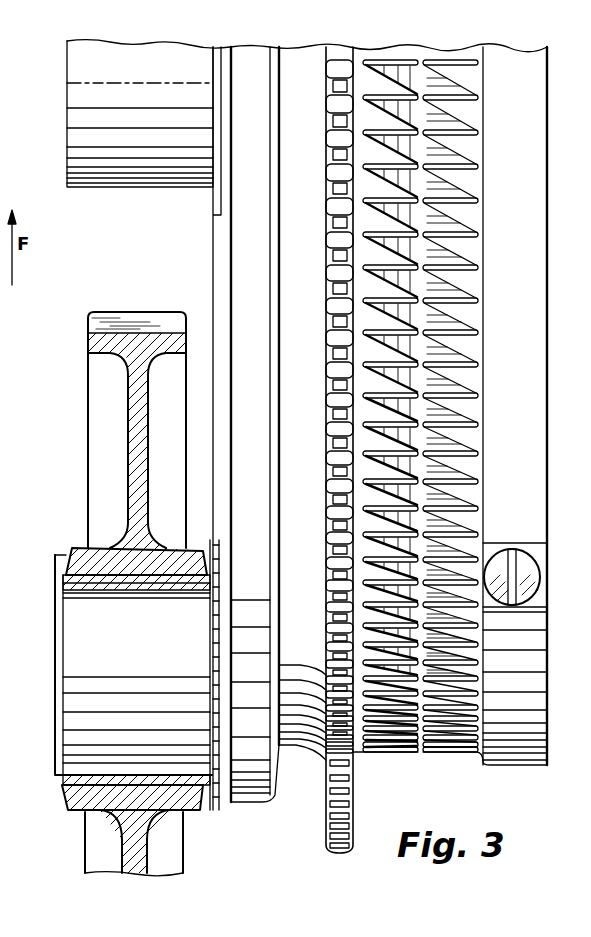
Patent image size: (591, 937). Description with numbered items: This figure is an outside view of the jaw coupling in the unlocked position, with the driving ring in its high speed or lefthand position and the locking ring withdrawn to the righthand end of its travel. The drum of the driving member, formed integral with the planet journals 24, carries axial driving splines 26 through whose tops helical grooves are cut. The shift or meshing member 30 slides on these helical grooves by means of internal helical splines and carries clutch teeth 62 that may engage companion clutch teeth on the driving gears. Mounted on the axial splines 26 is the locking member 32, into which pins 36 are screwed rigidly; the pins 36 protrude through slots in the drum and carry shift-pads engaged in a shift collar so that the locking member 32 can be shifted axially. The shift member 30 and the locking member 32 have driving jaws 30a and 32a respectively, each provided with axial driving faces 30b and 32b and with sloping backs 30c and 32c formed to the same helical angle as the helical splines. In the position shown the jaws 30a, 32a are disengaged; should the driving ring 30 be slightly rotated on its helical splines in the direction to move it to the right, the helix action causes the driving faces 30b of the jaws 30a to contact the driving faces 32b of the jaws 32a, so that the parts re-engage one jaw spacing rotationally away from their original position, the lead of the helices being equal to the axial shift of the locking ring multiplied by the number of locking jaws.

The planet journals 24 is at (80, 649).
The axial driving splines 26 is at (0, 366).
The shift or meshing member 30 is at (312, 743).
The driving jaws 30a is at (380, 80).
The axial driving faces 30b is at (386, 186).
The sloping backs 30c is at (389, 311).
The locking member 32 is at (515, 765).
The driving jaws 32a is at (457, 70).
The axial driving faces 32b is at (462, 232).
The sloping backs 32c is at (452, 146).
The pins 36 is at (522, 557).
The clutch teeth 62 is at (332, 850).